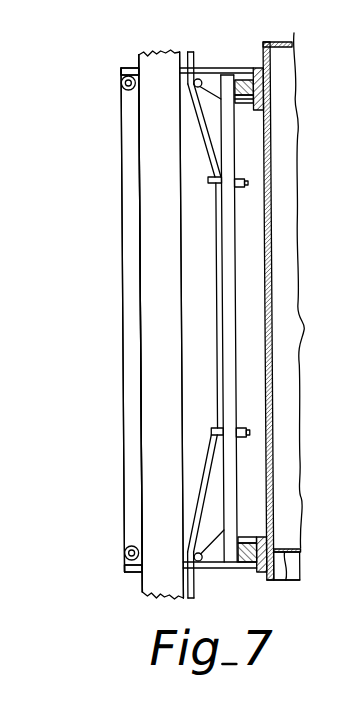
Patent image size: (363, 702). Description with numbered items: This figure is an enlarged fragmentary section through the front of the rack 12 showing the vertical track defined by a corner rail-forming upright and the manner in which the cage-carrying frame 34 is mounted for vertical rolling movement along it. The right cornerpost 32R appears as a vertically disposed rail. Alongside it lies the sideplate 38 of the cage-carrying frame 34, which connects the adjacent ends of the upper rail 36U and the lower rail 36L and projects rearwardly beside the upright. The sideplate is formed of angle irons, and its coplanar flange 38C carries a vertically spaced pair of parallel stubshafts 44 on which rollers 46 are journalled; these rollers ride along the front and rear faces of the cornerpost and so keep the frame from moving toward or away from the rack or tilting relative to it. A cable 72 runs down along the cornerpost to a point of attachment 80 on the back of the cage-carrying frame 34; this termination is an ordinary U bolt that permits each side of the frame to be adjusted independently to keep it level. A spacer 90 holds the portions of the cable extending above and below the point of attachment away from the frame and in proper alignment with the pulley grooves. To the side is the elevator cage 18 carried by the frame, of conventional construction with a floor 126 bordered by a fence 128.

The rack 12 is at (133, 599).
The elevator cage 18 is at (273, 470).
The right cornerpost 32R is at (147, 328).
The cage-carrying frame 34 is at (110, 423).
The upper rail 36U is at (255, 68).
The lower rail 36L is at (257, 571).
The sideplate 38 is at (124, 217).
The coplanar flange 38C is at (192, 272).
The stubshaft 44 is at (121, 87).
The roller 46 is at (123, 68).
The cable 72 is at (202, 127).
The point of attachment 80 is at (209, 181).
The spacer 90 is at (222, 530).
The floor 126 is at (285, 581).
The fence 128 is at (265, 362).